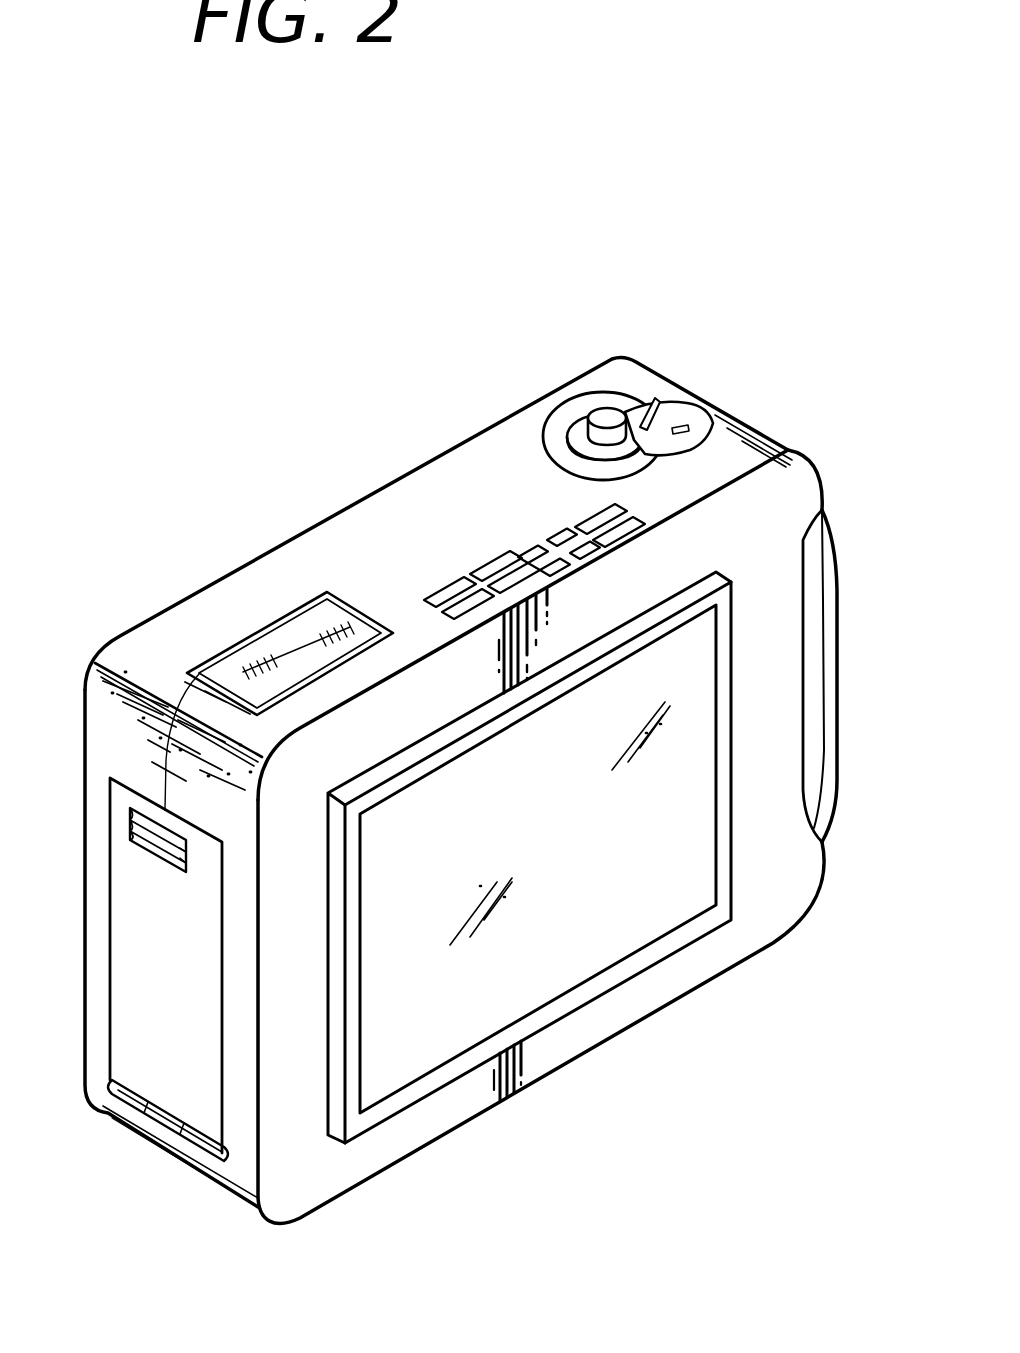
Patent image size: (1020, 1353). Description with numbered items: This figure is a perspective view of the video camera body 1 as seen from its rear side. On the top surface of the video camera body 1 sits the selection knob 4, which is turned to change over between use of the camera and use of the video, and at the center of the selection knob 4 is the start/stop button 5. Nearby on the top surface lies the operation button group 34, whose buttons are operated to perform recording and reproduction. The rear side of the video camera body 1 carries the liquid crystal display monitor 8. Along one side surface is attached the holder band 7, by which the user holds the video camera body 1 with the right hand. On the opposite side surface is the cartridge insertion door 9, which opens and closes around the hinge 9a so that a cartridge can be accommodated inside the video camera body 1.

The video camera body 1 is at (358, 492).
The selection knob 4 is at (697, 450).
The start/stop button 5 is at (608, 413).
The holder band 7 is at (838, 704).
The liquid crystal display monitor 8 is at (578, 960).
The cartridge insertion door 9 is at (133, 993).
The hinge 9a is at (153, 1110).
The operation button group 34 is at (497, 562).